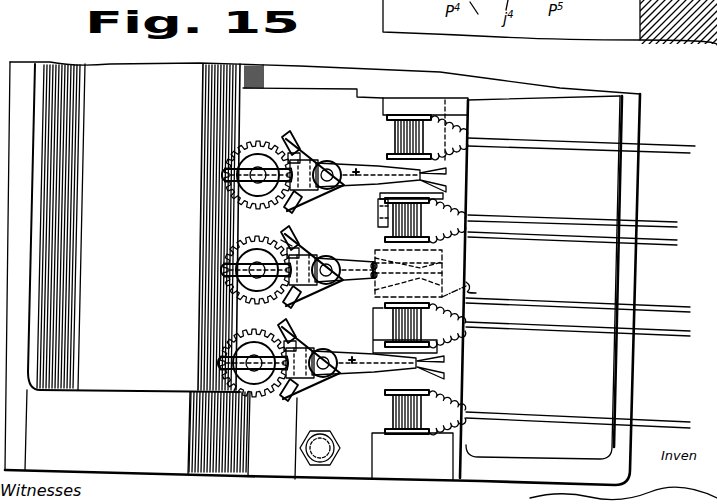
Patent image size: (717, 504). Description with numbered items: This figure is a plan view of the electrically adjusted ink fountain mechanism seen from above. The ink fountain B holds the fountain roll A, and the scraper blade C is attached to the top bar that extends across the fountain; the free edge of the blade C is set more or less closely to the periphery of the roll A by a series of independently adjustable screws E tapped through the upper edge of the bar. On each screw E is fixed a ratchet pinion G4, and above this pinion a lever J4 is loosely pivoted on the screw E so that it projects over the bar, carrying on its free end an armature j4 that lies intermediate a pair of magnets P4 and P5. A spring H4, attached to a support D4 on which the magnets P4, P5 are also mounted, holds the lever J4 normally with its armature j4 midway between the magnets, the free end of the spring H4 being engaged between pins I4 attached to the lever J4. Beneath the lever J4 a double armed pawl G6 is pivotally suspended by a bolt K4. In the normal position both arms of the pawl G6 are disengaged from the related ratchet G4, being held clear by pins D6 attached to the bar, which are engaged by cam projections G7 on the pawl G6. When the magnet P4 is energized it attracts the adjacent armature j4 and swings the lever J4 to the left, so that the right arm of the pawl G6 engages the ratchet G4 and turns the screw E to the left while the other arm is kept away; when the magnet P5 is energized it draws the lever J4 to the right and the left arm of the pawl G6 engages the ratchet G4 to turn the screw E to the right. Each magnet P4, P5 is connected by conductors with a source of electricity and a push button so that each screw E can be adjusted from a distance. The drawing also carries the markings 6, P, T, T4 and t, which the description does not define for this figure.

The fountain roll A is at (161, 271).
The ink fountain B is at (629, 371).
The scraper blade C is at (304, 87).
The support D4 is at (462, 268).
The pins D6 is at (293, 242).
The screws E is at (226, 182).
The ratchet pinion G4 is at (235, 160).
The double armed pawl G6 is at (297, 148).
The pawl 6 is at (274, 230).
The cam projections G7 is at (306, 152).
The spring H4 is at (436, 176).
The pins I4 is at (370, 268).
The lever J4 is at (368, 170).
The bolt K4 is at (340, 151).
The base plate P is at (359, 470).
The magnet P4 is at (405, 128).
The magnet P5 is at (392, 230).
The terminal plate T is at (544, 237).
The wire T4 is at (667, 152).
The wires t is at (568, 223).
The armature j4 is at (441, 190).